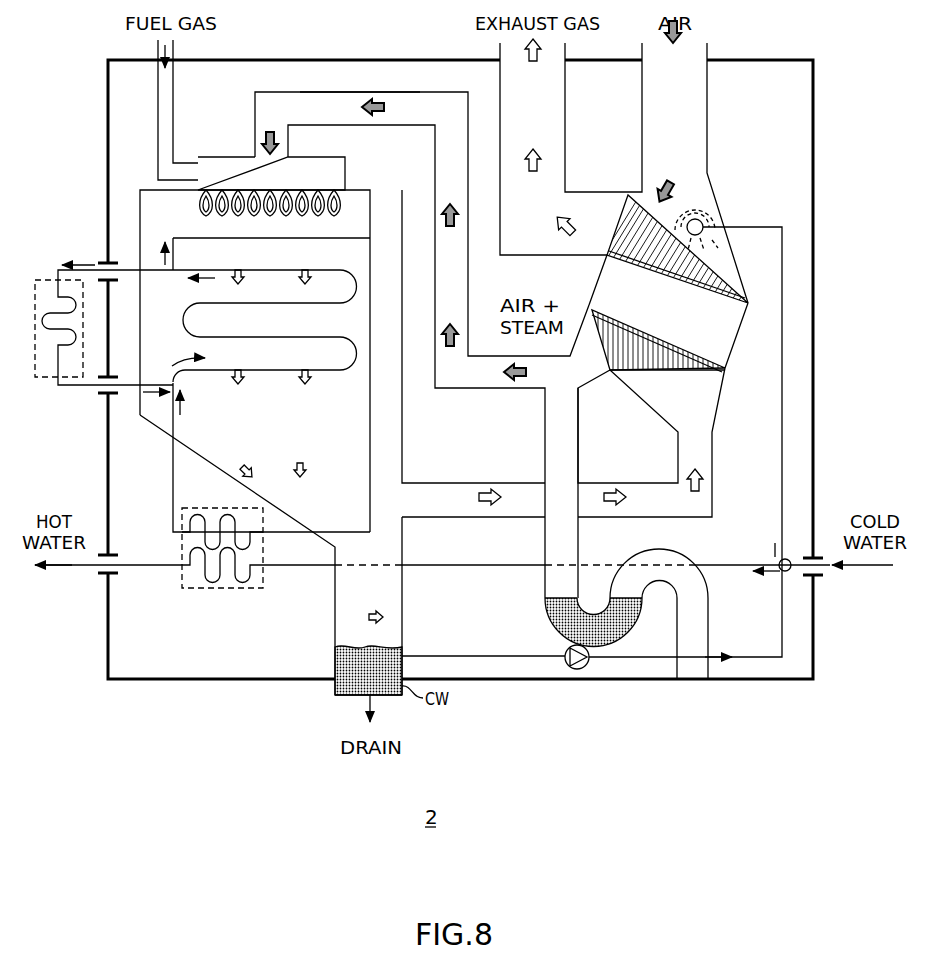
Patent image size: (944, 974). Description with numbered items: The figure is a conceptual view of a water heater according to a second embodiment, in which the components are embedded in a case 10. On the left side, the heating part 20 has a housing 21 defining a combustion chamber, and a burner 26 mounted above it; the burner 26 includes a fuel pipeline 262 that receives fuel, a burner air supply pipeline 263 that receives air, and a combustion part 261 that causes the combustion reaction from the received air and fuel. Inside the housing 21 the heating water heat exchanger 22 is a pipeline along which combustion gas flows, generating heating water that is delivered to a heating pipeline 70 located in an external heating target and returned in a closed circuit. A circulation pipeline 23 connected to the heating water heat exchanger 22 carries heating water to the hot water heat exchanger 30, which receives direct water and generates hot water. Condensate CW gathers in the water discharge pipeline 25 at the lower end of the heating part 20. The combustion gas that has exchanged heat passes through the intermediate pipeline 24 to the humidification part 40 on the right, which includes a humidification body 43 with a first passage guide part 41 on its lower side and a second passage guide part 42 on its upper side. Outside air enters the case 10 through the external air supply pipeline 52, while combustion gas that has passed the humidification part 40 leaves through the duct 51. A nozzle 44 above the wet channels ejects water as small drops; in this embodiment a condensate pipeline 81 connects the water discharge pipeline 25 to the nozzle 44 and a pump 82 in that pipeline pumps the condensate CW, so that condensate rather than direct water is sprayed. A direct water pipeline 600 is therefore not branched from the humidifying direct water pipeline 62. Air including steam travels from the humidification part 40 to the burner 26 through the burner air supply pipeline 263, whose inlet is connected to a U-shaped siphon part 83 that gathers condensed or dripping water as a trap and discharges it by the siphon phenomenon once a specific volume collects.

The case 10 is at (748, 680).
The heating part 20 is at (128, 412).
The housing 21 is at (162, 434).
The heating water heat exchanger 22 is at (320, 372).
The circulation pipeline 23 is at (173, 498).
The intermediate pipeline 24 is at (435, 483).
The water discharge pipeline 25 is at (335, 662).
The burner 26 is at (322, 88).
The combustion part 261 is at (345, 172).
The fuel pipeline 262 is at (158, 108).
The burner air supply pipeline 263 is at (360, 92).
The hot water heat exchanger 30 is at (233, 600).
The humidification part 40 is at (745, 360).
The first passage guide part 41 is at (722, 362).
The second passage guide part 42 is at (712, 270).
The humidification body 43 is at (738, 340).
The nozzle 44 is at (701, 219).
The duct 51 is at (570, 128).
The external air supply pipeline 52 is at (713, 160).
The humidifying direct water pipeline 62 is at (782, 465).
The heating pipeline 70 is at (50, 300).
The condensate pipeline 81 is at (664, 662).
The pump 82 is at (578, 681).
The siphon part 83 is at (718, 620).
The direct water pipeline 600 is at (790, 571).